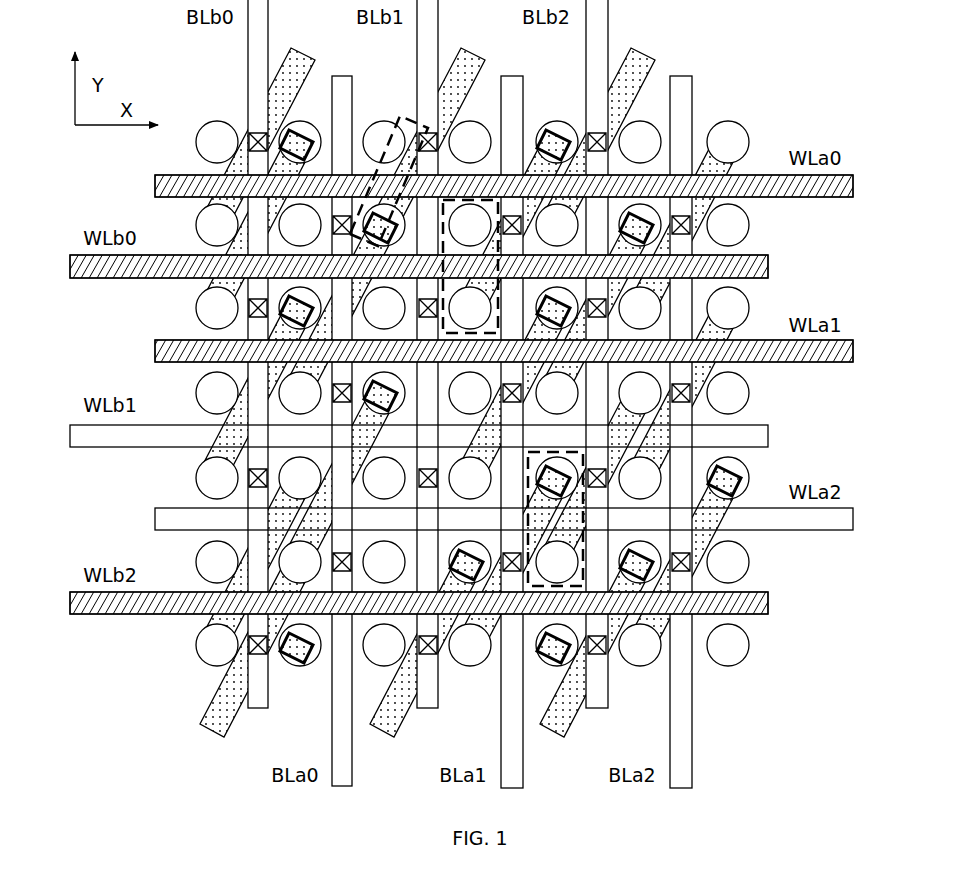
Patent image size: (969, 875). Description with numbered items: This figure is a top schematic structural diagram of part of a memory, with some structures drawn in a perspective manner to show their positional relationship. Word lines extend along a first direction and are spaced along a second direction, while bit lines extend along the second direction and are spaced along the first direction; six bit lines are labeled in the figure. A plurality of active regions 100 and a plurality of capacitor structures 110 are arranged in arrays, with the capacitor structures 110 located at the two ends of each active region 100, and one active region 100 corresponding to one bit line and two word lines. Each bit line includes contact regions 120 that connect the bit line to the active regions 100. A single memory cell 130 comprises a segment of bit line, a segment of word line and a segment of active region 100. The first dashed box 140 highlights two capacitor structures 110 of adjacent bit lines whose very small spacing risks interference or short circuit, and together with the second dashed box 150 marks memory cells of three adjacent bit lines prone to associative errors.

The active region 100 is at (287, 78).
The capacitor structure 110 is at (562, 138).
The contact region 120 is at (251, 132).
The memory cell 130 is at (410, 124).
The first dashed box 140 is at (489, 194).
The second dashed box 150 is at (526, 594).